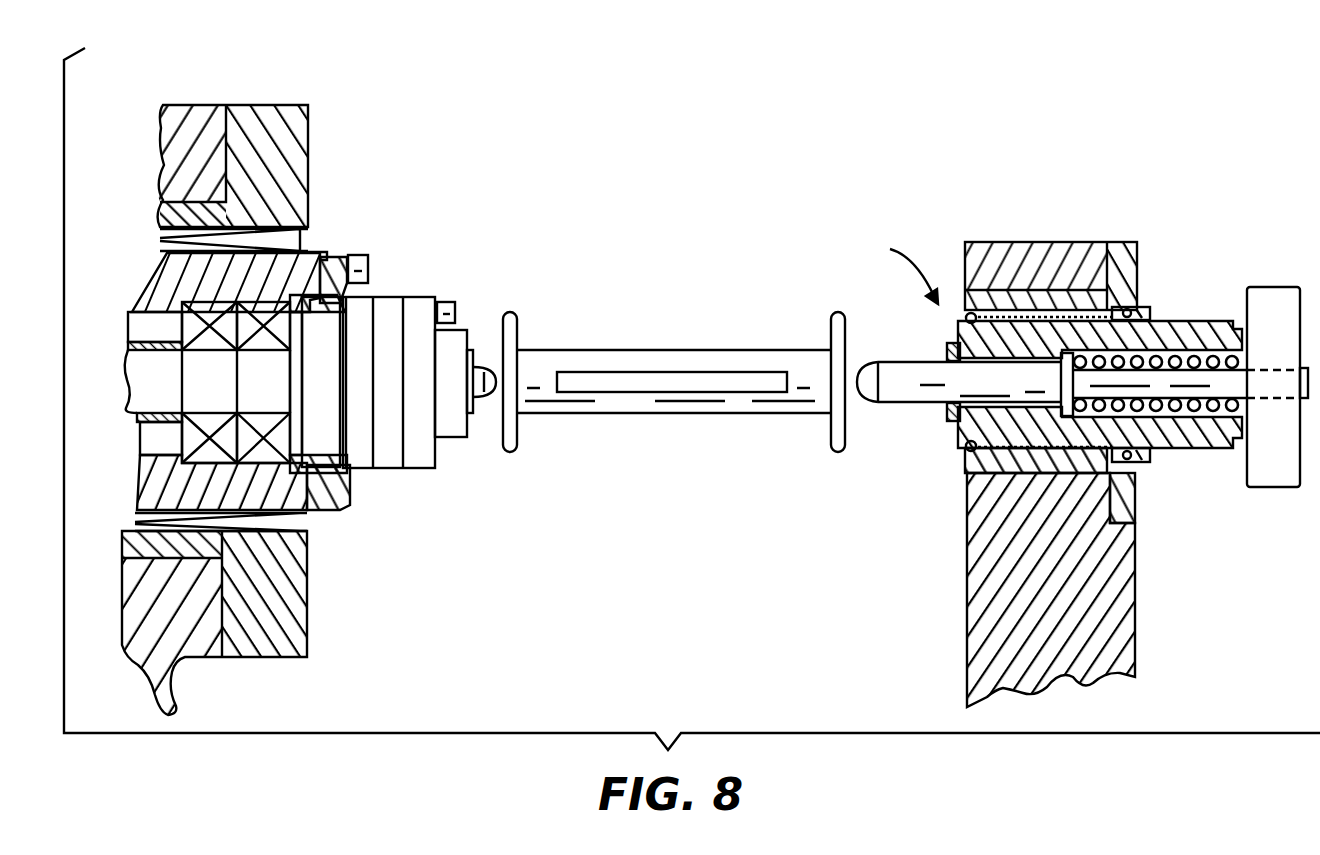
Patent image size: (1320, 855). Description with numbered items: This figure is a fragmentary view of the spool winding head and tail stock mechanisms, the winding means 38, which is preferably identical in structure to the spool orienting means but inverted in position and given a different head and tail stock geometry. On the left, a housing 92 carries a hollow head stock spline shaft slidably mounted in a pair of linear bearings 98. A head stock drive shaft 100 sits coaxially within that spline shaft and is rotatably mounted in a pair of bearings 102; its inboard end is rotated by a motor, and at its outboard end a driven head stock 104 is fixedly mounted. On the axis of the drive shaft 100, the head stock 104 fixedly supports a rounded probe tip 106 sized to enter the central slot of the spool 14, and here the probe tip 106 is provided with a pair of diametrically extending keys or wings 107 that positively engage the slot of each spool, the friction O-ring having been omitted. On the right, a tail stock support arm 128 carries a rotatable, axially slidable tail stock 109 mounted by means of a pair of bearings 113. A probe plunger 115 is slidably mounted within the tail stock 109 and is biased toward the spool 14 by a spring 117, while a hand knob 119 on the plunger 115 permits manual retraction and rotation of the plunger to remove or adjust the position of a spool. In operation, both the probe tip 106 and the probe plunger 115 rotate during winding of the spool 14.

The spool 14 is at (641, 352).
The means for winding 38 is at (884, 260).
The housing 92 is at (197, 112).
The linear bearings 98 is at (305, 239).
The head stock drive shaft 100 is at (143, 433).
The bearings 102 is at (308, 527).
The head stock 104 is at (390, 300).
The probe tip 106 is at (488, 400).
The keys or wings 107 is at (477, 365).
The tail stock 109 is at (968, 343).
The bearings 113 is at (968, 450).
The probe plunger 115 is at (910, 404).
The spring 117 is at (1193, 358).
The hand knob 119 is at (1278, 288).
The tail stock support arm 128 is at (1127, 609).